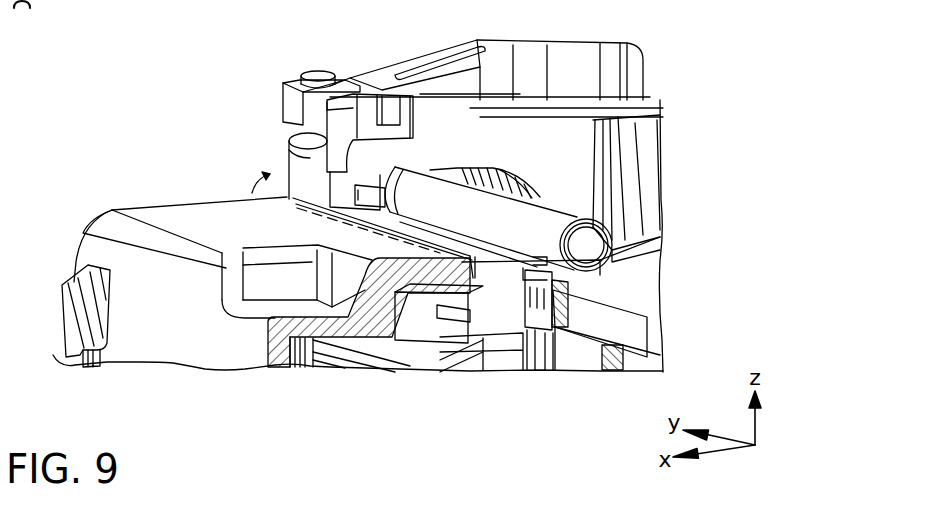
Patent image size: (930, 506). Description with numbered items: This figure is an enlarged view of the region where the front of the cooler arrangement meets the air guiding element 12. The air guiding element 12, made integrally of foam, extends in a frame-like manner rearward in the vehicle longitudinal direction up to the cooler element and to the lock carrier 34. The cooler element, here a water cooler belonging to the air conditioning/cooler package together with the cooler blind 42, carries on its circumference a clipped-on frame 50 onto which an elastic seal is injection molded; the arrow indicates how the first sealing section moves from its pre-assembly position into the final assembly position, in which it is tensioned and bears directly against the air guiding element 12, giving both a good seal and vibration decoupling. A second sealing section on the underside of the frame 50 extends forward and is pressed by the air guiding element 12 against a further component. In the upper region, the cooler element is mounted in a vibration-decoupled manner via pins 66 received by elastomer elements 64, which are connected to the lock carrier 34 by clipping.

The air guiding element 12 is at (178, 342).
The lock carrier 34 is at (532, 72).
The cooler blind 42 is at (613, 362).
The frame 50 is at (425, 310).
The elastomer elements 64 is at (292, 143).
The pins 66 is at (318, 132).